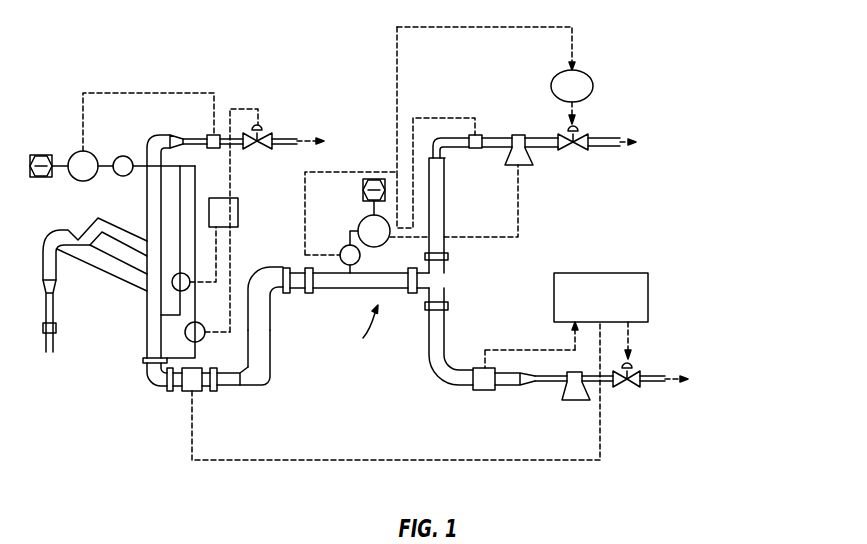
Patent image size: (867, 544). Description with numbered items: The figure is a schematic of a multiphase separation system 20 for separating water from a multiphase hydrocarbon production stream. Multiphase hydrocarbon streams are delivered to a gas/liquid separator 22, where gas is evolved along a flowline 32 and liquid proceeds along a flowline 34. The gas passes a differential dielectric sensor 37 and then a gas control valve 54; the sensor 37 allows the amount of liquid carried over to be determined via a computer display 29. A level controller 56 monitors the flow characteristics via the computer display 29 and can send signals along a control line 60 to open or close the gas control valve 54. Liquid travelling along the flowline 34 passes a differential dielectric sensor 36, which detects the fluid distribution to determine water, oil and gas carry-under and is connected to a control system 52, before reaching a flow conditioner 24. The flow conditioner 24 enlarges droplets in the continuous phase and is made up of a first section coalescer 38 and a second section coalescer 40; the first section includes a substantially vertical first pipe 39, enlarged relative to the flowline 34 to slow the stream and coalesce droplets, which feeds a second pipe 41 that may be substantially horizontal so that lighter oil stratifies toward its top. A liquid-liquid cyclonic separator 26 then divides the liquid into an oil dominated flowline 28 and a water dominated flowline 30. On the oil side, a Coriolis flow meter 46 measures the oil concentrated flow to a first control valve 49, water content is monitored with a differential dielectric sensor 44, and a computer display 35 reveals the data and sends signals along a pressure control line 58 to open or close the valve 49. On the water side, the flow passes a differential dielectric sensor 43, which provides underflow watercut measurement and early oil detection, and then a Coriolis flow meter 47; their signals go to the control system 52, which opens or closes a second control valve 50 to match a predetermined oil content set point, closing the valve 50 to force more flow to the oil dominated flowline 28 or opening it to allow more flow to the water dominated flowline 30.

The multiphase separation system 20 is at (132, 37).
The gas/liquid separator 22 is at (27, 342).
The flow conditioner 24 is at (422, 403).
The liquid-liquid cyclonic separator 26 is at (445, 287).
The oil dominated flowline 28 is at (444, 199).
The computer display 29 is at (75, 152).
The water dominated flowline 30 is at (445, 336).
The flowline 32 is at (147, 207).
The flowline 34 is at (147, 332).
The computer display 35 is at (363, 190).
The differential dielectric sensor 36 is at (182, 392).
The differential dielectric sensor 37 is at (214, 148).
The first section coalescer 38 is at (287, 367).
The first pipe 39 is at (270, 317).
The second section coalescer 40 is at (365, 336).
The second pipe 41 is at (335, 290).
The differential dielectric sensor 43 is at (483, 390).
The differential dielectric sensor 44 is at (476, 148).
The Coriolis flow meter 46 is at (518, 133).
The Coriolis flow meter 47 is at (574, 401).
The first control valve 49 is at (584, 134).
The second control valve 50 is at (633, 388).
The control system 52 is at (648, 303).
The gas control valve 54 is at (263, 130).
The level controller 56 is at (238, 205).
The pressure control line 58 is at (496, 27).
The control line 60 is at (247, 108).